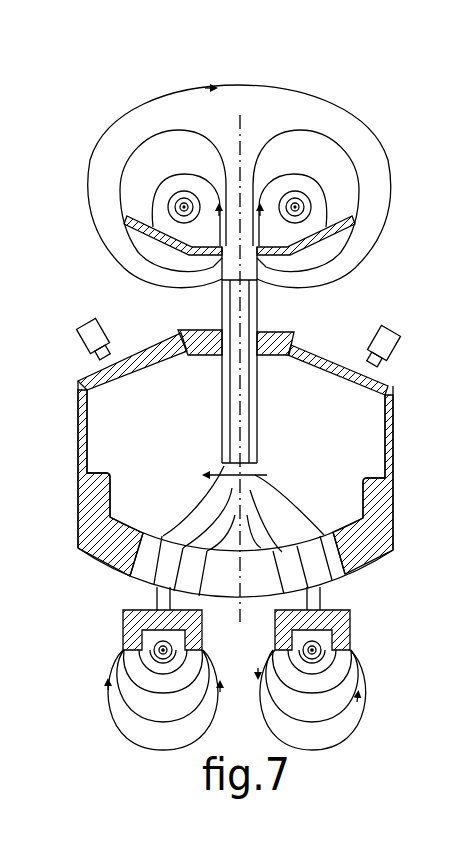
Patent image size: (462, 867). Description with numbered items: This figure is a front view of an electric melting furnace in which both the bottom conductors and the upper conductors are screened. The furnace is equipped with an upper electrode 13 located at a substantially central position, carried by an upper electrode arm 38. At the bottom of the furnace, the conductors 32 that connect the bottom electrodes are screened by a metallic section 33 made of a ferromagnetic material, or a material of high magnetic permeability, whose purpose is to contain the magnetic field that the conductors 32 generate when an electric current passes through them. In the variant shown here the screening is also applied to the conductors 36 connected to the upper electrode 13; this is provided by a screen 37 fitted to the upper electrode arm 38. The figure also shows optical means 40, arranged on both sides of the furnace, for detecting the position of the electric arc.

The upper electrode 13 is at (247, 381).
The conductors 32 is at (158, 652).
The metallic section 33 is at (130, 627).
The conductors 36 is at (299, 203).
The screen 37 is at (322, 229).
The upper electrode arm 38 is at (228, 265).
The optical means 40 is at (88, 344).